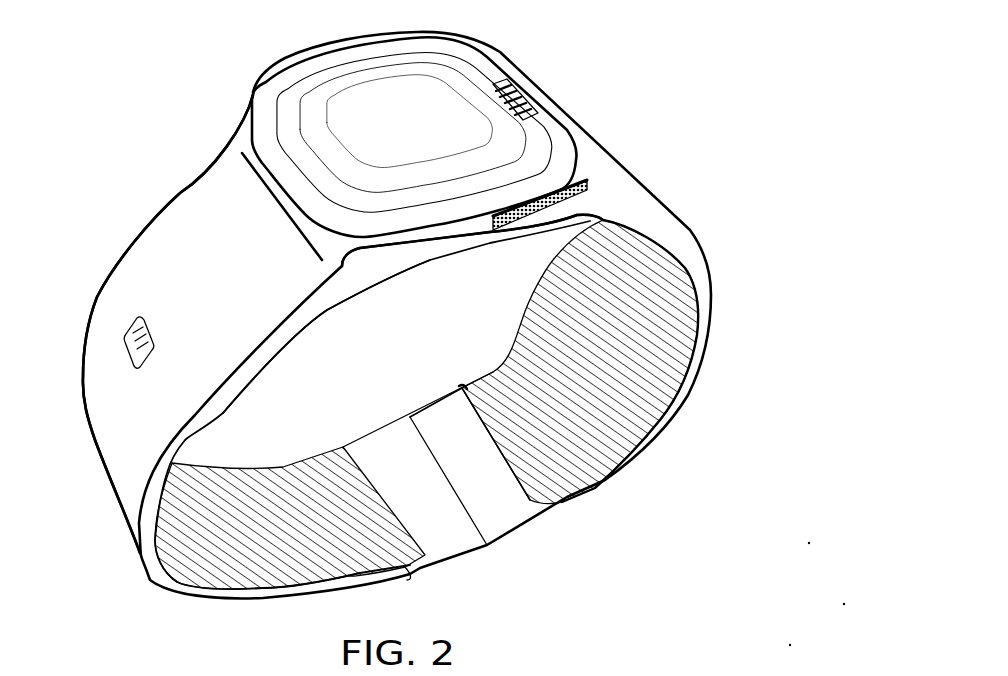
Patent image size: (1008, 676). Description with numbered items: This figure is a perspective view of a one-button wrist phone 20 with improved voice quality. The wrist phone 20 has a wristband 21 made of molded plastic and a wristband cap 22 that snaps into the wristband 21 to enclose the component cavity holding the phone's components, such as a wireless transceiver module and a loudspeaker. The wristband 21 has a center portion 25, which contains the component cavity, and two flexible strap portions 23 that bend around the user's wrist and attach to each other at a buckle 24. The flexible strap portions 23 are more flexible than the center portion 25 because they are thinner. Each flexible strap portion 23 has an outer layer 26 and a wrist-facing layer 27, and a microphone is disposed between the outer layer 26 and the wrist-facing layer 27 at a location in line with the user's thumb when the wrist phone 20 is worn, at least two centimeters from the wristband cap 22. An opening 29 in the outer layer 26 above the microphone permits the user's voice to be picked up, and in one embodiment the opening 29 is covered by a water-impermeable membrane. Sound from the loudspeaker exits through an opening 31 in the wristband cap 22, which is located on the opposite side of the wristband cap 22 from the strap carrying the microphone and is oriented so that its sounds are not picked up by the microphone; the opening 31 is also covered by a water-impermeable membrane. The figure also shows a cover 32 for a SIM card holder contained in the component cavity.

The one-button wrist phone 20 is at (119, 95).
The wristband 21 is at (535, 338).
The wristband cap 22 is at (405, 123).
The flexible strap portion 23 is at (180, 391).
The buckle 24 is at (526, 530).
The center portion 25 is at (377, 274).
The outer layer 26 is at (110, 294).
The wrist-facing layer 27 is at (305, 334).
The opening 29 is at (181, 323).
The opening 31 is at (566, 88).
The cover 32 is at (588, 186).